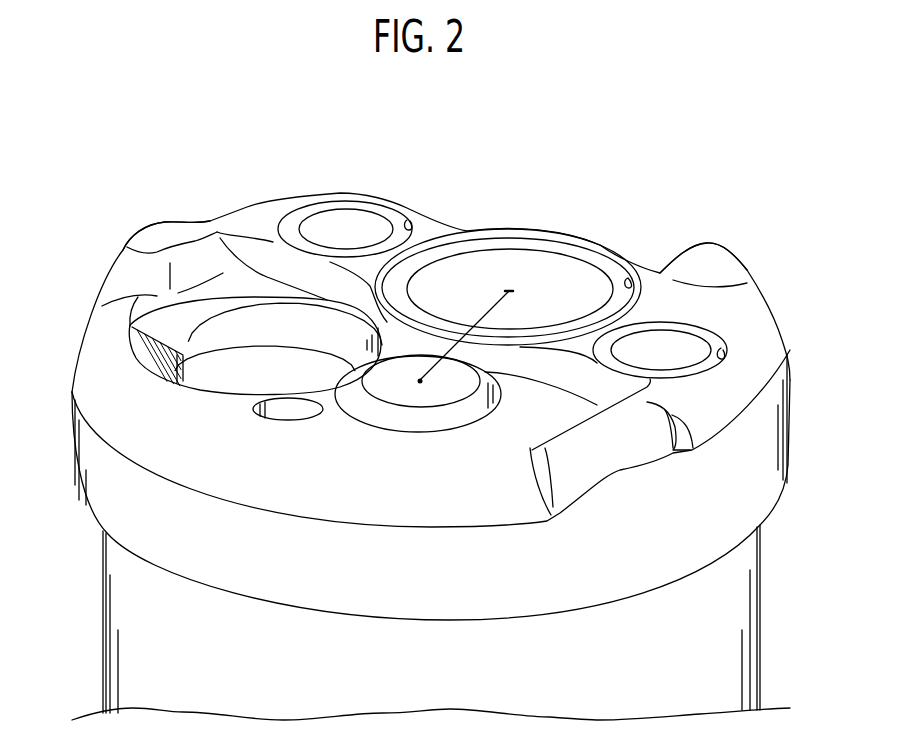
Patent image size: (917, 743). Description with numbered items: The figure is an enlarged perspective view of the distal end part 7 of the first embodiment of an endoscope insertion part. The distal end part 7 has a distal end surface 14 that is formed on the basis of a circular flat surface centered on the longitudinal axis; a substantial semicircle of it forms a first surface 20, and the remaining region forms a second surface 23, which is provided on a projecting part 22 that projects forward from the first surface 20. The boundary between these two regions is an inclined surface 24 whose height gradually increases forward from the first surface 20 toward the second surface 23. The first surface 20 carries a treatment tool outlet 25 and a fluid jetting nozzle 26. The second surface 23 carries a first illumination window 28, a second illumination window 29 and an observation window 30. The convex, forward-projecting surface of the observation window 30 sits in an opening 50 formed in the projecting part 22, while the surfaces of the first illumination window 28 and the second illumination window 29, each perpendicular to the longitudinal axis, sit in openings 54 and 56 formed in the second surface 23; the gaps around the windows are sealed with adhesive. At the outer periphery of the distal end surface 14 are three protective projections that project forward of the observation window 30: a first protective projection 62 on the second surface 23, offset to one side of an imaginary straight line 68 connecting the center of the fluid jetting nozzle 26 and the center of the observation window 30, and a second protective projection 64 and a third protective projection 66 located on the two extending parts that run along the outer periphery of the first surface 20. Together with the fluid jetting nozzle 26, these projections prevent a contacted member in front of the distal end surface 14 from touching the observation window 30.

The distal end part 7 is at (461, 171).
The distal end surface 14 is at (100, 133).
The first surface 20 is at (110, 313).
The projecting part 22 is at (246, 202).
The second surface 23 is at (228, 222).
The inclined surface 24 is at (260, 256).
The treatment tool outlet 25 is at (226, 374).
The fluid jetting nozzle 26 is at (412, 390).
The first illumination window 28 is at (338, 228).
The second illumination window 29 is at (664, 352).
The observation window 30 is at (507, 280).
The opening 50 is at (628, 278).
The opening 54 is at (407, 221).
The opening 56 is at (720, 351).
The first protective projection 62 is at (710, 254).
The second protective projection 64 is at (160, 234).
The third protective projection 66 is at (617, 443).
The imaginary straight line 68 is at (483, 318).